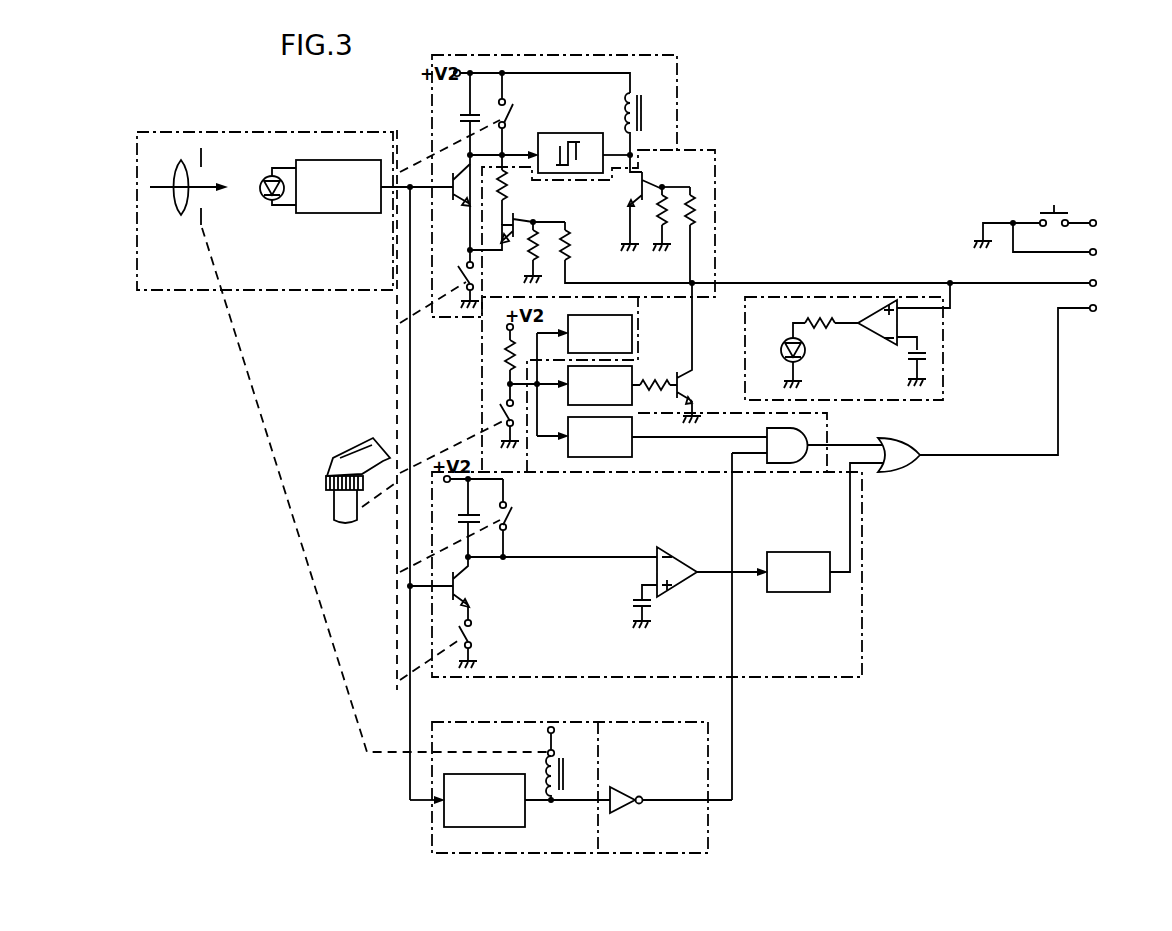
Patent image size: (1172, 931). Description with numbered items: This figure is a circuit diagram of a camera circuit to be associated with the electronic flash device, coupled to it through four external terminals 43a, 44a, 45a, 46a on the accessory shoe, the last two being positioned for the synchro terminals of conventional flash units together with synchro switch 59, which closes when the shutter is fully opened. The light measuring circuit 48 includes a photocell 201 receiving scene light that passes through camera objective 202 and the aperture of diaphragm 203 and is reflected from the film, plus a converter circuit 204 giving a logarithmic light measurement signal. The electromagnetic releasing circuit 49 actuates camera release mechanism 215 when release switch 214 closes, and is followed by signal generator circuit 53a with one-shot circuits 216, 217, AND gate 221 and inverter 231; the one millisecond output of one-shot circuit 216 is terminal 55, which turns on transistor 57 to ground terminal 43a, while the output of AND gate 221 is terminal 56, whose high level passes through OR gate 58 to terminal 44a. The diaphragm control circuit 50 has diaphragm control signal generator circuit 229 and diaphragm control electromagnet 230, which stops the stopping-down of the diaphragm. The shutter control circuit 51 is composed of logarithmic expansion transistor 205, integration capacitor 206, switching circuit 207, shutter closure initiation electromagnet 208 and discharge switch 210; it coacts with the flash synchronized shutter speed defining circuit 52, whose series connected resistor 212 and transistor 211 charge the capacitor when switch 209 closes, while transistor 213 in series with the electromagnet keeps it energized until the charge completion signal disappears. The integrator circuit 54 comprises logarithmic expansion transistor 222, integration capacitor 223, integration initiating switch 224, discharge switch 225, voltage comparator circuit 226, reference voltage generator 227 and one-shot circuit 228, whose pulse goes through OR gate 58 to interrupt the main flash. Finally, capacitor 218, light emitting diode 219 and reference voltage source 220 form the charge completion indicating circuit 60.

The light measuring circuit 48 is at (232, 131).
The electromagnetic releasing circuit 49 is at (480, 352).
The diaphragm control circuit 50 is at (430, 838).
The shutter control circuit 51 is at (677, 55).
The flash synchronized shutter speed defining circuit 52 is at (717, 152).
The signal generator circuit 53a is at (832, 414).
The integrator circuit 54 is at (822, 680).
The terminal 55 is at (641, 370).
The terminal 56 is at (829, 448).
The transistor 57 is at (694, 386).
The OR gate 58 is at (984, 390).
The synchro switch 59 is at (1054, 213).
The charge completion indicating circuit 60 is at (862, 297).
The external terminal 43a is at (1118, 284).
The external terminal 44a is at (1118, 310).
The external terminal 45a is at (1118, 225).
The external terminal 46a is at (1079, 244).
The photocell 201 is at (269, 201).
The camera objective 202 is at (172, 215).
The diaphragm 203 is at (201, 226).
The converter circuit 204 is at (374, 186).
The logarithmic expansion transistor 205 is at (451, 202).
The integration capacitor 206 is at (460, 133).
The switching circuit 207 is at (569, 133).
The shutter closure initiation electromagnet 208 is at (640, 112).
The switch 209 is at (460, 271).
The discharge switch 210 is at (509, 116).
The transistor 211 is at (507, 228).
The resistor 212 is at (512, 178).
The transistor 213 is at (650, 182).
The release switch 214 is at (497, 420).
The camera release mechanism 215 is at (600, 334).
The one-shot circuit 216 is at (600, 385).
The one-shot circuit 217 is at (667, 437).
The capacitor 218 is at (820, 346).
The light emitting diode 219 is at (781, 339).
The reference voltage source 220 is at (910, 358).
The AND gate 221 is at (770, 614).
The logarithmic expansion transistor 222 is at (466, 589).
The integration capacitor 223 is at (447, 518).
The integration initiating switch 224 is at (478, 635).
The discharge switch 225 is at (509, 516).
The voltage comparator circuit 226 is at (690, 546).
The reference voltage generator 227 is at (650, 607).
The one-shot circuit 228 is at (790, 527).
The diaphragm control signal generator circuit 229 is at (510, 800).
The diaphragm control electromagnet 230 is at (566, 766).
The inverter 231 is at (626, 796).